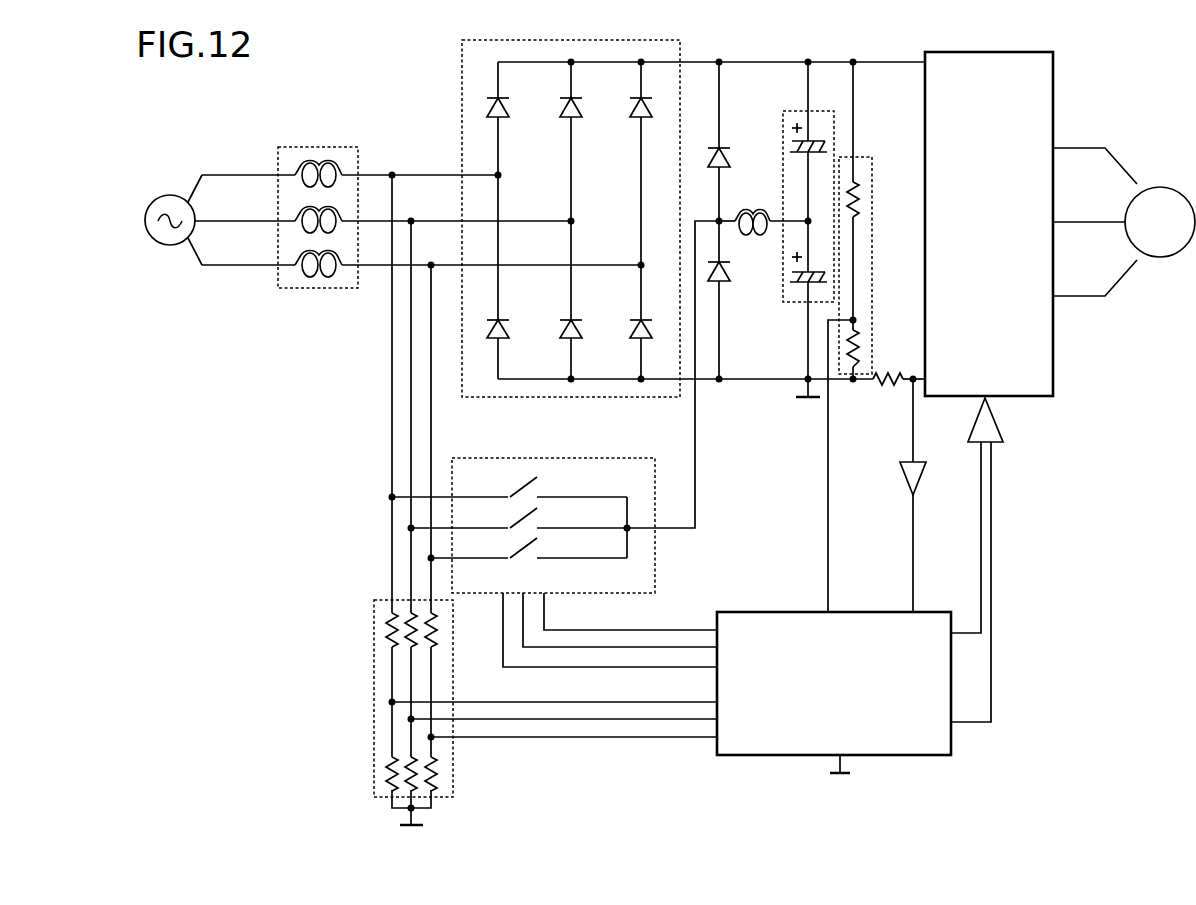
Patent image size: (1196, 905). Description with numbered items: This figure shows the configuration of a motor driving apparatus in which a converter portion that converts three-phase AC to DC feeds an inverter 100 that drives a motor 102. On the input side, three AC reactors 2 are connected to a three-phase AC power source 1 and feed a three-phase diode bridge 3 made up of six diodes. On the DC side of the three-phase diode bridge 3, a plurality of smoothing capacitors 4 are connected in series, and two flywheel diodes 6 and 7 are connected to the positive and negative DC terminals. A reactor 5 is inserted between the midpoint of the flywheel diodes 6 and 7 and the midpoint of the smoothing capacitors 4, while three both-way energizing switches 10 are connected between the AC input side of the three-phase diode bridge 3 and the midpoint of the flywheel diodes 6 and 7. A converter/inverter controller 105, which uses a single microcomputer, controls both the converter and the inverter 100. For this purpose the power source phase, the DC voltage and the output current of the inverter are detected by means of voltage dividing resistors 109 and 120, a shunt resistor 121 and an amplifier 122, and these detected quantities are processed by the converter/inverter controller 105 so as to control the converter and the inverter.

The three-phase AC power source 1 is at (183, 198).
The AC reactors 2 is at (316, 147).
The three-phase diode bridge 3 is at (461, 89).
The smoothing capacitors 4 is at (783, 140).
The reactor 5 is at (752, 213).
The flywheel diode 6 is at (715, 148).
The flywheel diode 7 is at (725, 283).
The both-way energizing switches 10 is at (553, 458).
The inverter 100 is at (1053, 80).
The motor 102 is at (1157, 187).
The converter/inverter controller 105 is at (905, 757).
The voltage dividing resistors 109 is at (374, 622).
The voltage dividing resistors 120 is at (865, 157).
The shunt resistor 121 is at (898, 375).
The amplifier 122 is at (907, 477).